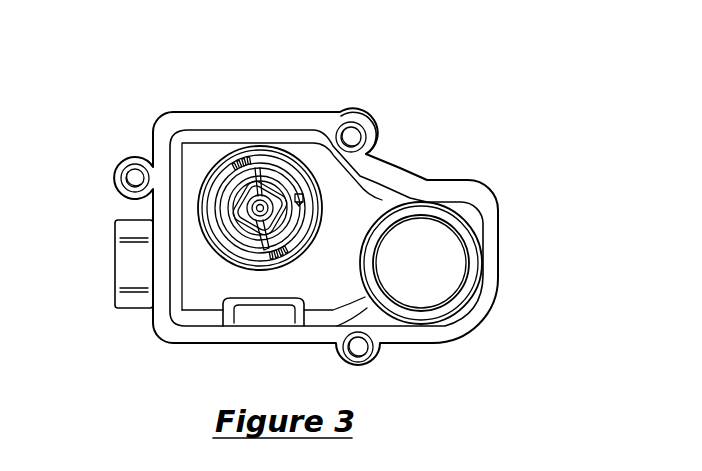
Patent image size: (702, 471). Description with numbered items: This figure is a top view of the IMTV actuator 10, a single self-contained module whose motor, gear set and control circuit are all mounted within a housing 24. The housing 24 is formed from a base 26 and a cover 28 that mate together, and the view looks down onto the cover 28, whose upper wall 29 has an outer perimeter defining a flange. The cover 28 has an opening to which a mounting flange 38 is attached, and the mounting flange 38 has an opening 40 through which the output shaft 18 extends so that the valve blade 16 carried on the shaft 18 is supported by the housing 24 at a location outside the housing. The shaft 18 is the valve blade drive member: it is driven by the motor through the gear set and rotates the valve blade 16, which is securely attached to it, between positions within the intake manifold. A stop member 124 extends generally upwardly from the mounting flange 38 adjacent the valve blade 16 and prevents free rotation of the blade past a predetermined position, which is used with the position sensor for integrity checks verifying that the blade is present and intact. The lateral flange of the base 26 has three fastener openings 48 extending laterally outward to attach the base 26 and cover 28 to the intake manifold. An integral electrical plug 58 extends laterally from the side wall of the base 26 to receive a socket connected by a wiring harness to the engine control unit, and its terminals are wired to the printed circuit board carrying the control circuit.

The IMTV actuator 10 is at (465, 81).
The valve blade 16 is at (256, 180).
The output shaft 18 is at (247, 202).
The housing 24 is at (514, 210).
The base 26 is at (327, 112).
The cover 28 is at (370, 203).
The upper wall 29 is at (213, 295).
The mounting flange 38 is at (212, 216).
The opening 40 is at (250, 220).
The fastener openings 48 is at (124, 174).
The electrical plug 58 is at (113, 268).
The stop member 124 is at (303, 198).